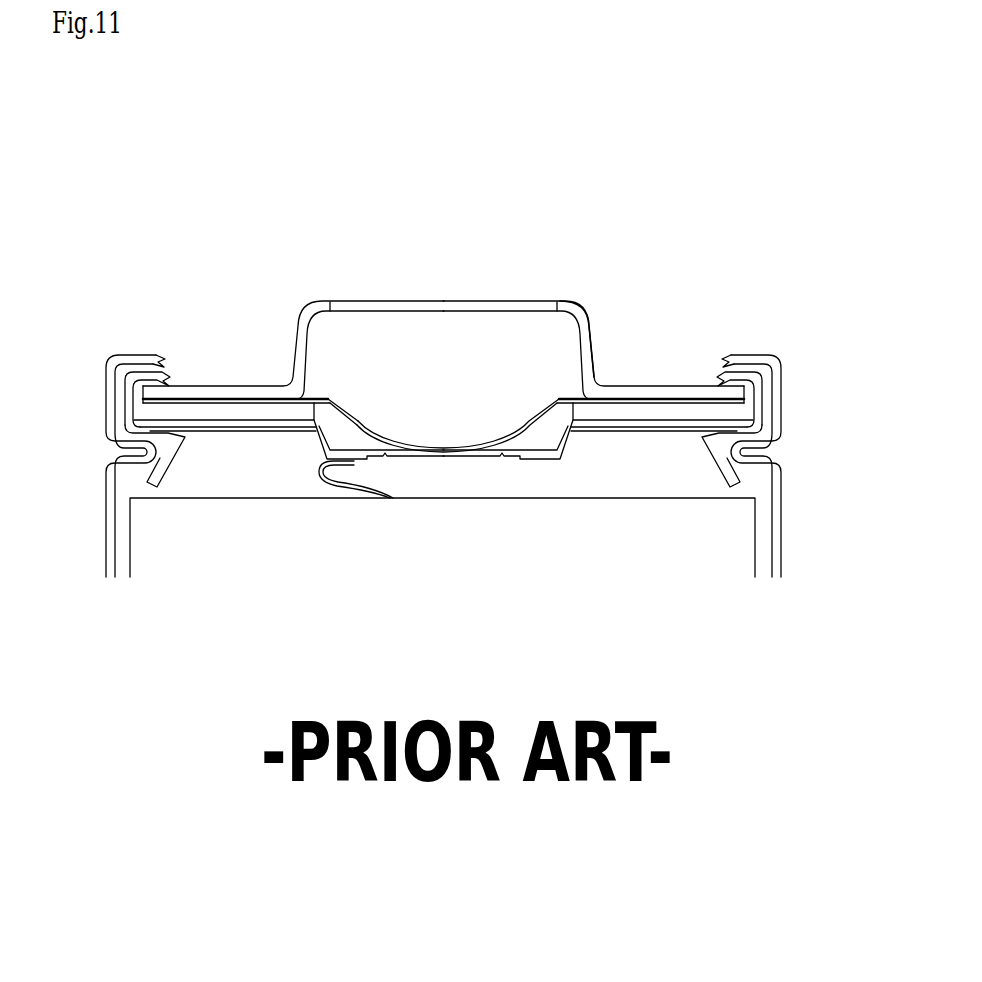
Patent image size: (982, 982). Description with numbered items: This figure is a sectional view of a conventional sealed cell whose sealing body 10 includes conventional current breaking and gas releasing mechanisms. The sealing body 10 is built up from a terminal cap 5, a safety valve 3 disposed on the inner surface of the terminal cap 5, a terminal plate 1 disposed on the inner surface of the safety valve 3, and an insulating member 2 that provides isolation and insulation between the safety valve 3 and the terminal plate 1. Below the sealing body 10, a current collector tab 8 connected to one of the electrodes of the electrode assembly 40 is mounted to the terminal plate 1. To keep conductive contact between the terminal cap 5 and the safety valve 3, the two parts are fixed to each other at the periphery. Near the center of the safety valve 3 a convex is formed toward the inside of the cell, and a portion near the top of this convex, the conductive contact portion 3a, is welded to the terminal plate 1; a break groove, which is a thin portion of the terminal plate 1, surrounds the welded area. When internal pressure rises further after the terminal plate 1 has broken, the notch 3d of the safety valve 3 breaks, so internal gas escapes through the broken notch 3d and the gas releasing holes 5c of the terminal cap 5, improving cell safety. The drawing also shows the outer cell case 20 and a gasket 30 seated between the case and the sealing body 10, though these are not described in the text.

The terminal plate 1 is at (582, 432).
The insulating member 2 is at (735, 415).
The safety valve 3 is at (443, 355).
The conductive contact portion 3a is at (352, 418).
The notch 3d is at (533, 415).
The terminal cap 5 is at (443, 326).
The gas releasing holes 5c is at (577, 310).
The current collector tab 8 is at (328, 481).
The sealing body 10 is at (480, 368).
The battery case 20 is at (107, 513).
The gasket 30 is at (745, 435).
The electrode assembly 40 is at (743, 520).